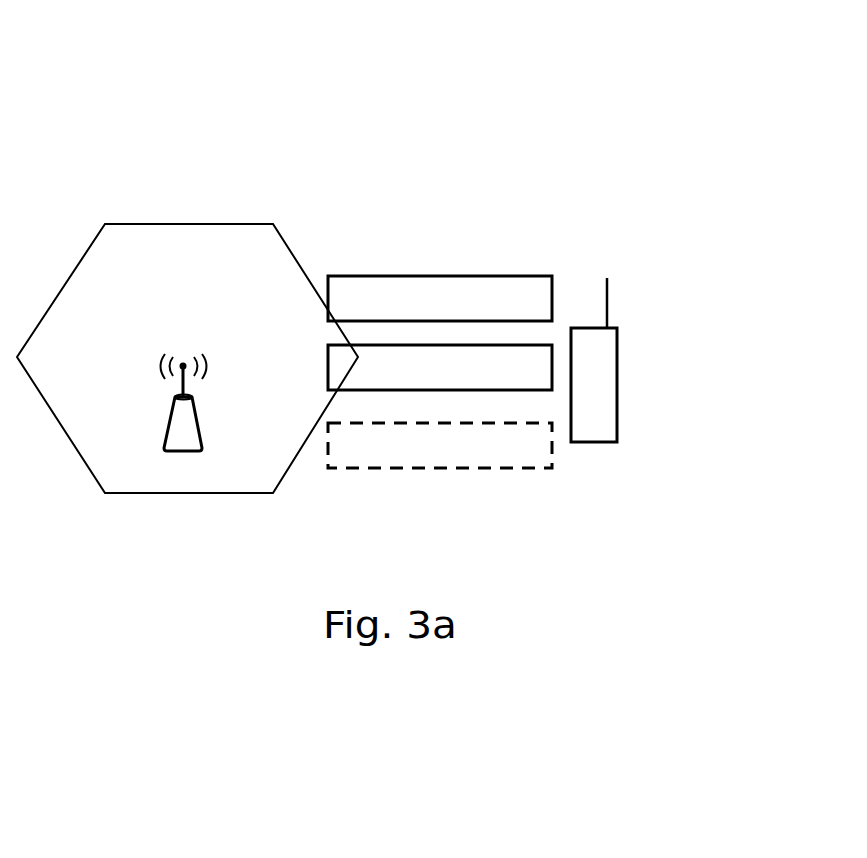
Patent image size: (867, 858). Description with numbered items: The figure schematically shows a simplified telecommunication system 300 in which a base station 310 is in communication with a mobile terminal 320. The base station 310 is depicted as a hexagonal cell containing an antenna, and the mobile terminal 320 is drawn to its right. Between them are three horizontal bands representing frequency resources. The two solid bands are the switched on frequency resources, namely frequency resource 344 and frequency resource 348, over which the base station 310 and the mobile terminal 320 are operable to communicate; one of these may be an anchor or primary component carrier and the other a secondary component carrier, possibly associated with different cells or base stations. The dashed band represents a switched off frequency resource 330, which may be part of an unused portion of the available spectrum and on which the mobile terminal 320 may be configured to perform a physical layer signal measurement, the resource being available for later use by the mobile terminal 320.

The telecommunication system 300 is at (330, 180).
The base station 310 is at (187, 376).
The mobile terminal 320 is at (661, 360).
The switched off frequency resource 330 is at (440, 445).
The frequency resource 344 is at (440, 298).
The frequency resource 348 is at (440, 367).